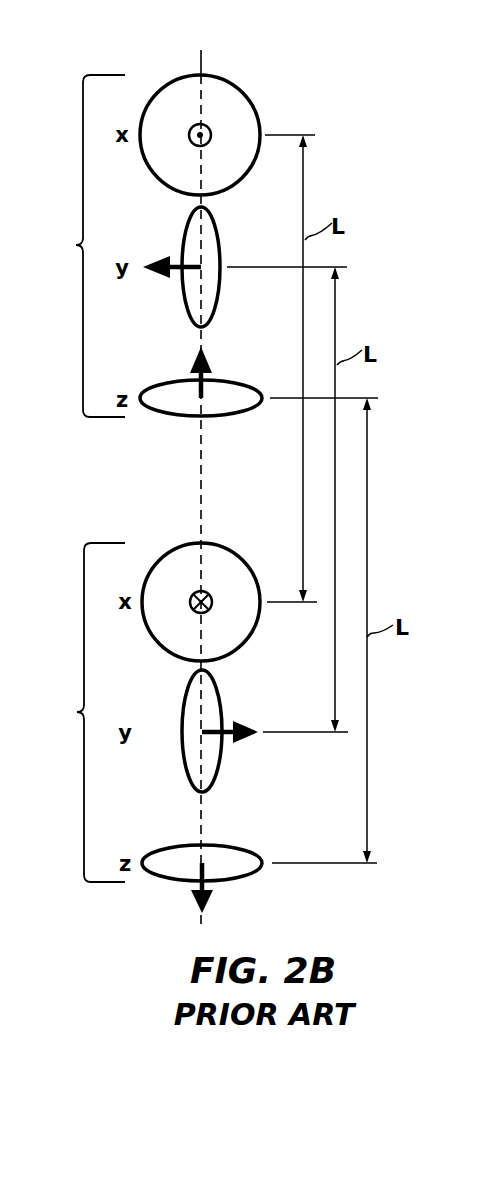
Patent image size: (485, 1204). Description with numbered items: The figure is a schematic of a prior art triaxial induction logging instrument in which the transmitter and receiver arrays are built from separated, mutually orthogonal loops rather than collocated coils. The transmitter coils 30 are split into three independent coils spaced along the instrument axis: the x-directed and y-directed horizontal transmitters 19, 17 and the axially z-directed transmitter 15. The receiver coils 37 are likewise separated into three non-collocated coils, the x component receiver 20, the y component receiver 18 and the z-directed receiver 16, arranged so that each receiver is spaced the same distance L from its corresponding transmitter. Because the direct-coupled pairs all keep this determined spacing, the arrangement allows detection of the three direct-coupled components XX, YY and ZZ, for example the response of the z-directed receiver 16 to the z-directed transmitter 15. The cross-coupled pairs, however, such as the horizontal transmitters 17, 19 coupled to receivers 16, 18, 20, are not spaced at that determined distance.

The z-directed transmitter 15 is at (233, 382).
The z-directed receiver 16 is at (232, 847).
The horizontal transmitter 17 is at (220, 240).
The y component receiver 18 is at (222, 702).
The horizontal transmitter 19 is at (242, 93).
The x component receiver 20 is at (222, 545).
The transmitter coils 30 is at (83, 246).
The receiver coils 37 is at (83, 712).